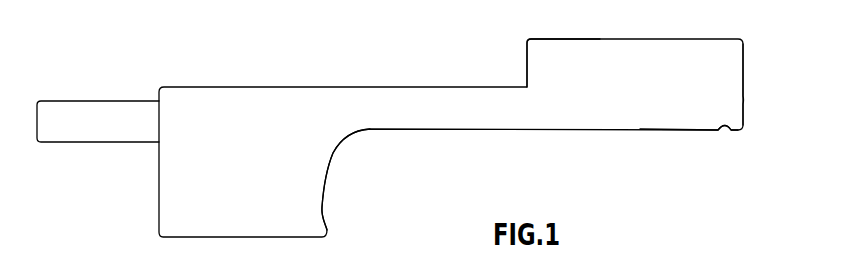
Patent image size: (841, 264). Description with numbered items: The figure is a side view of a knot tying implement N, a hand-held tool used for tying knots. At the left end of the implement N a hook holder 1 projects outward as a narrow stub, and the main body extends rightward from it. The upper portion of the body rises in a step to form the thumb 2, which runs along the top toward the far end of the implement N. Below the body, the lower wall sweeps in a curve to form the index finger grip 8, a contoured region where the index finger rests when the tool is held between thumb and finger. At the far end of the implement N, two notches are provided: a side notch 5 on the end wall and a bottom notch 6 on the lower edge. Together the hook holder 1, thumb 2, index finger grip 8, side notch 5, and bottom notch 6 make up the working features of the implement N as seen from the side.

The knot tying implement N is at (398, 103).
The hook holder 1 is at (97, 128).
The thumb 2 is at (480, 88).
The index finger grip 8 is at (327, 178).
The side notch 5 is at (740, 100).
The bottom notch 6 is at (720, 130).